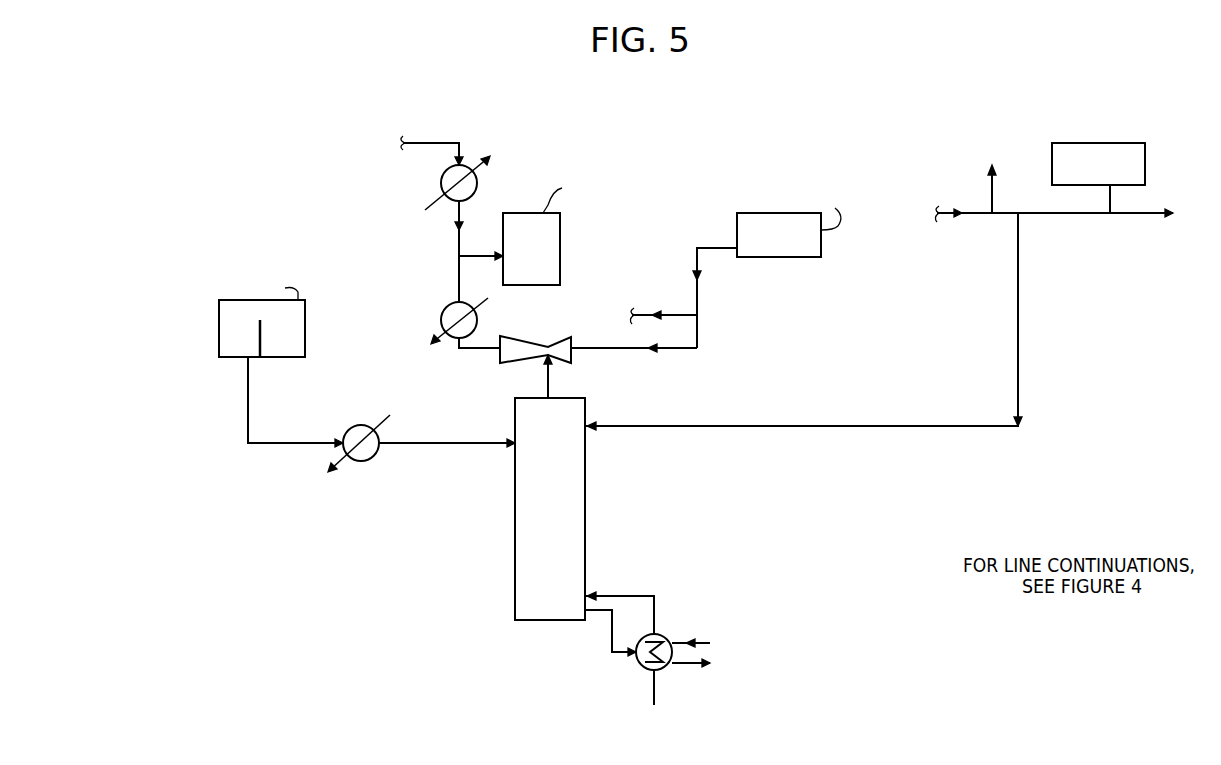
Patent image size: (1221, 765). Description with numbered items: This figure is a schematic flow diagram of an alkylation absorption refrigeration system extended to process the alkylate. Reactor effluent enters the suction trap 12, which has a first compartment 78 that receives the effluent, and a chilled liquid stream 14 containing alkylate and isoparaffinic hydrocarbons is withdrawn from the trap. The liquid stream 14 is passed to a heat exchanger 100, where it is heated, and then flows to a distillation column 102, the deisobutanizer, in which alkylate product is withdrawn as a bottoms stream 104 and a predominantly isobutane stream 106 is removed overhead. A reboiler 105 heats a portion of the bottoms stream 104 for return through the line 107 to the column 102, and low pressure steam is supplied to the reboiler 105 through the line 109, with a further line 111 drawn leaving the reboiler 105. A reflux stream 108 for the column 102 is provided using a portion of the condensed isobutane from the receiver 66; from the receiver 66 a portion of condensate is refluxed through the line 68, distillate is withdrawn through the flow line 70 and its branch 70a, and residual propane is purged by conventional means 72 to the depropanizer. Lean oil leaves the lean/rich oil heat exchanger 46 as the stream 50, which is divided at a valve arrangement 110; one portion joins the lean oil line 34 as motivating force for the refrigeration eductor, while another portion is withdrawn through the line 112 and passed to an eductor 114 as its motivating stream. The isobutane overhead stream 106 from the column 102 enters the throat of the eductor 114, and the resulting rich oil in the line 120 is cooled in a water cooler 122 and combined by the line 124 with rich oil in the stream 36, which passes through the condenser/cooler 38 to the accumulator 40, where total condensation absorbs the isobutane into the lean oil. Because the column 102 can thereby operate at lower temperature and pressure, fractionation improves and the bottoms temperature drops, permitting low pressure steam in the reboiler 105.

The suction trap 12 is at (218, 320).
The chilled liquid stream 14 is at (248, 400).
The lean oil line 34 is at (665, 312).
The eductor effluent stream 36 is at (452, 140).
The condenser/cooler 38 is at (441, 183).
The accumulator 40 is at (560, 246).
The heat exchanger 46 is at (776, 258).
The lean oil stream 50 is at (696, 262).
The receiver 66 is at (1146, 166).
The reflux line 68 is at (1150, 214).
The flow line 70 is at (1046, 215).
The overhead line branch 70a is at (968, 214).
The propane purge means 72 is at (993, 197).
The first compartment 78 is at (246, 338).
The heat exchanger 100 is at (365, 461).
The distillation column 102 is at (586, 488).
The bottoms stream 104 is at (612, 642).
The reboiler 105 is at (666, 640).
The isobutane overhead stream 106 is at (549, 381).
The reboiler return line 107 is at (648, 596).
The reflux stream 108 is at (760, 428).
The steam line 109 is at (710, 643).
The valve arrangement 110 is at (700, 318).
The reboiler heating medium outlet 111 is at (690, 668).
The lean oil line 112 is at (664, 350).
The eductor 114 is at (540, 362).
The rich oil line 120 is at (483, 349).
The water cooler 122 is at (442, 319).
The combining line 124 is at (458, 291).